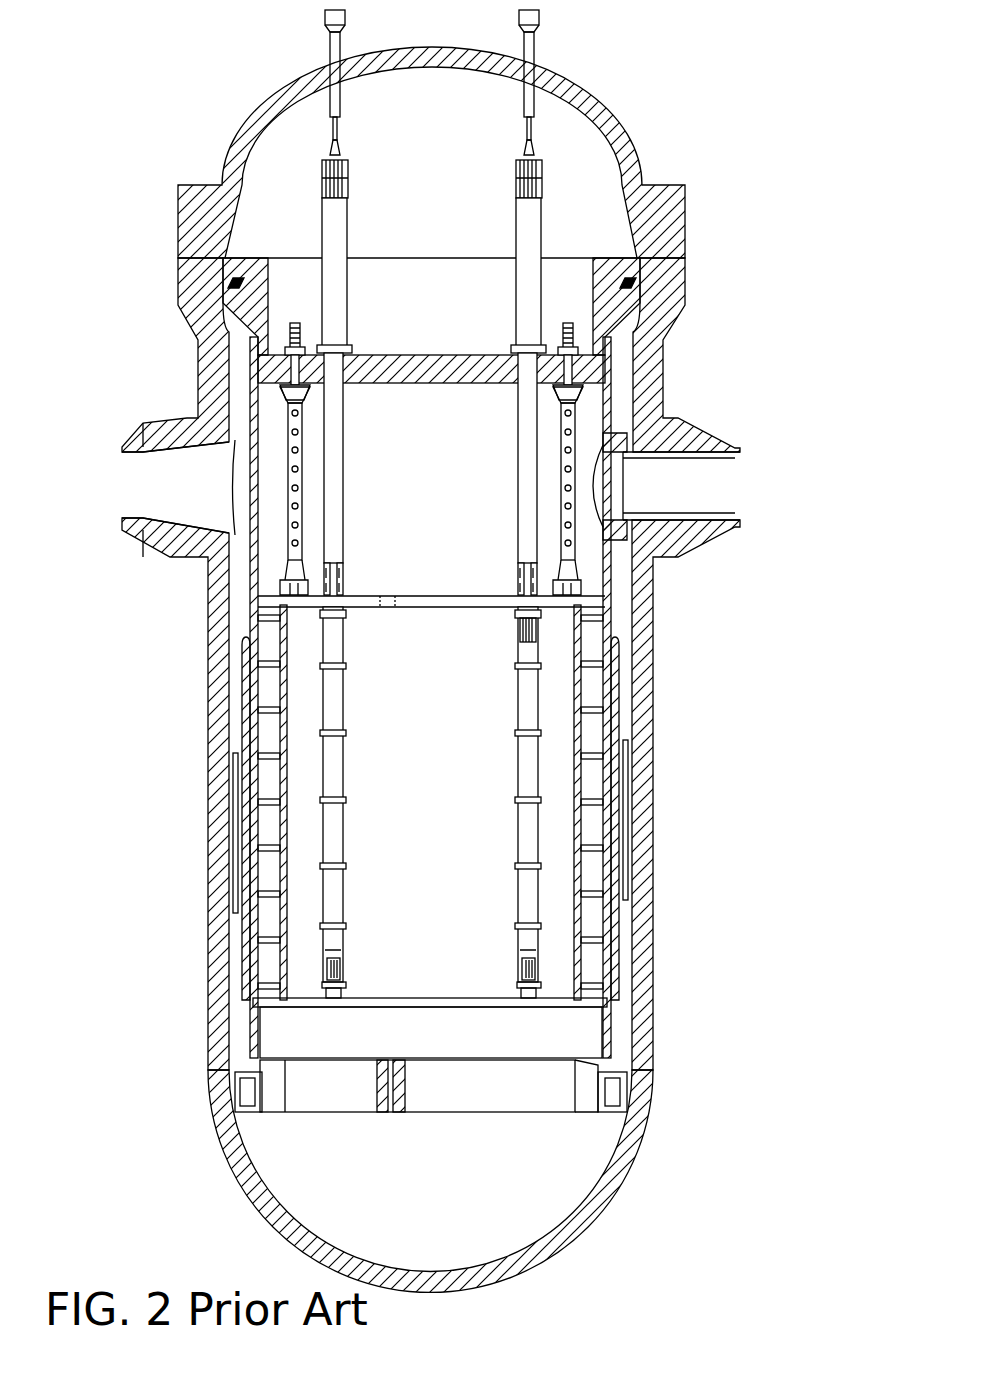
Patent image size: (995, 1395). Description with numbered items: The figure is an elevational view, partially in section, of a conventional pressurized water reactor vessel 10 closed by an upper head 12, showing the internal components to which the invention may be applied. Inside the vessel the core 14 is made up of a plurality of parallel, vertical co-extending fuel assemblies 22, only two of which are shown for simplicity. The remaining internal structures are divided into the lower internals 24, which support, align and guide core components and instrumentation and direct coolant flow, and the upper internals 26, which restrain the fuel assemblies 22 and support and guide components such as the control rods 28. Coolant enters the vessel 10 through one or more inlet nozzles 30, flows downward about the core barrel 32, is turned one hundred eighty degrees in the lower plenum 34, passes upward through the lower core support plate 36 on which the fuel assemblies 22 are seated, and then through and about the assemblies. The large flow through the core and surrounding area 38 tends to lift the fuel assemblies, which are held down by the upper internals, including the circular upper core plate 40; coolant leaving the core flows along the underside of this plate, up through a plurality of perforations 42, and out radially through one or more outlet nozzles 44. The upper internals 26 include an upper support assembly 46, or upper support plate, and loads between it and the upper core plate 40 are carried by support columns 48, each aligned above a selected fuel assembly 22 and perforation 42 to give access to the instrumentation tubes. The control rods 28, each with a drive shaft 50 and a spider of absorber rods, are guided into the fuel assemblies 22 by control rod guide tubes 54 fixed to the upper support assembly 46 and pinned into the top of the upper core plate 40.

The vessel 10 is at (666, 670).
The upper head 12 is at (690, 226).
The core 14 is at (430, 802).
The fuel assemblies 22 is at (347, 700).
The lower internals 24 is at (431, 1059).
The upper internals 26 is at (431, 393).
The control rods 28 is at (515, 610).
The inlet nozzles 30 is at (154, 426).
The core barrel 32 is at (212, 607).
The lower plenum 34 is at (595, 1165).
The lower core support plate 36 is at (492, 998).
The surrounding area 38 is at (598, 732).
The upper core plate 40 is at (476, 607).
The perforations 42 is at (383, 597).
The outlet nozzles 44 is at (707, 430).
The upper support assembly 46 is at (605, 258).
The support columns 48 is at (300, 483).
The drive shaft 50 is at (515, 185).
The control rod guide tubes 54 is at (346, 430).